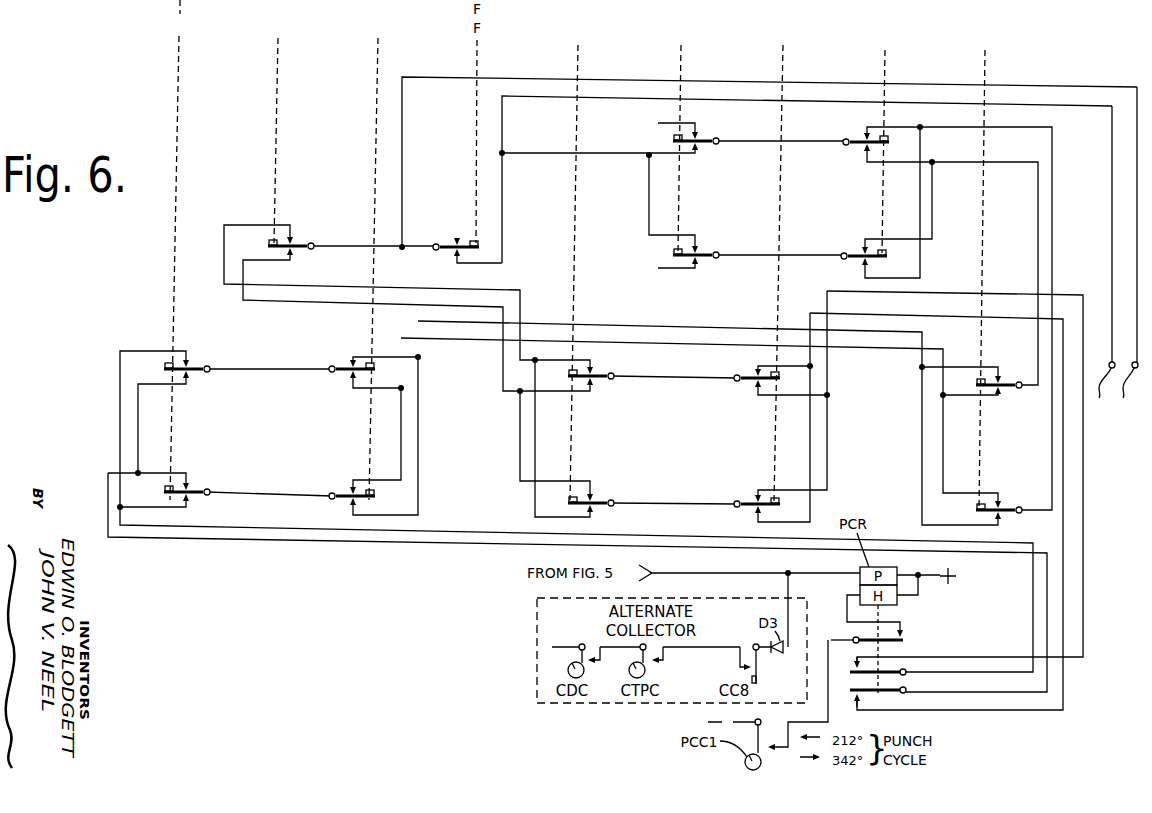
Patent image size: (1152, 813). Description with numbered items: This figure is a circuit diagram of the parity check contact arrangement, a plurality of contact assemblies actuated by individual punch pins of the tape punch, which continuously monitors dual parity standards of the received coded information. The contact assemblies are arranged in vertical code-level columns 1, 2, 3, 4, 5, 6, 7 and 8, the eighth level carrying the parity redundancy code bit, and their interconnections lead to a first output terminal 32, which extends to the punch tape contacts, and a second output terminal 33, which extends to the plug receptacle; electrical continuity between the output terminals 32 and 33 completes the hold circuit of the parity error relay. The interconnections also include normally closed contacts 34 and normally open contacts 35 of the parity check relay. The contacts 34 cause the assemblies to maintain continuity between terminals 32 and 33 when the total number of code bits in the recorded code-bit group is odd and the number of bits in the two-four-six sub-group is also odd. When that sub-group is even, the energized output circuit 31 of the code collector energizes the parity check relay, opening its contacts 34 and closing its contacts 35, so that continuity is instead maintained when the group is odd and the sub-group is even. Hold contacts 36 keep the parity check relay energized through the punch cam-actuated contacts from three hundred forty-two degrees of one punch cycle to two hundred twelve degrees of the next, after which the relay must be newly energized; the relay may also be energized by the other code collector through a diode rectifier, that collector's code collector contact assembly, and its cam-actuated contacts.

The code channel 1 line 1 is at (178, 250).
The code channel 2 line 2 is at (278, 122).
The code channel 3 line 3 is at (379, 250).
The code channel 4 line 4 is at (580, 252).
The code channel 5 line 5 is at (680, 128).
The code channel 6 line 6 is at (785, 253).
The code channel 7 line 7 is at (889, 131).
The code channel 8 line 8 is at (984, 259).
The energized output circuit 31 is at (654, 576).
The first output terminal 32 is at (1107, 261).
The second output terminal 33 is at (1133, 251).
The normally closed contacts 34 is at (887, 699).
The normally open contacts 35 is at (887, 666).
The hold contacts 36 is at (903, 629).